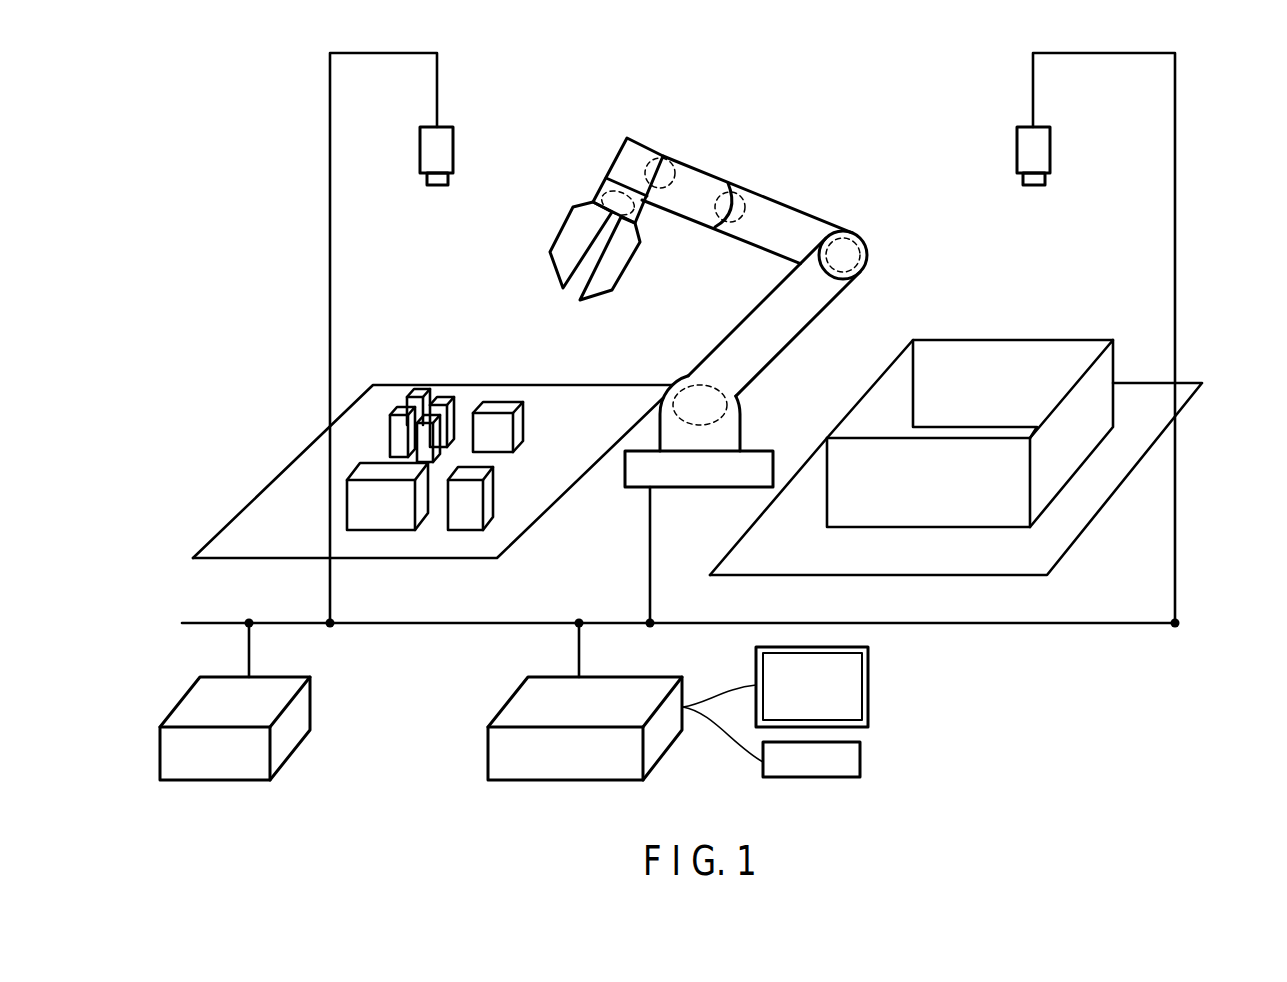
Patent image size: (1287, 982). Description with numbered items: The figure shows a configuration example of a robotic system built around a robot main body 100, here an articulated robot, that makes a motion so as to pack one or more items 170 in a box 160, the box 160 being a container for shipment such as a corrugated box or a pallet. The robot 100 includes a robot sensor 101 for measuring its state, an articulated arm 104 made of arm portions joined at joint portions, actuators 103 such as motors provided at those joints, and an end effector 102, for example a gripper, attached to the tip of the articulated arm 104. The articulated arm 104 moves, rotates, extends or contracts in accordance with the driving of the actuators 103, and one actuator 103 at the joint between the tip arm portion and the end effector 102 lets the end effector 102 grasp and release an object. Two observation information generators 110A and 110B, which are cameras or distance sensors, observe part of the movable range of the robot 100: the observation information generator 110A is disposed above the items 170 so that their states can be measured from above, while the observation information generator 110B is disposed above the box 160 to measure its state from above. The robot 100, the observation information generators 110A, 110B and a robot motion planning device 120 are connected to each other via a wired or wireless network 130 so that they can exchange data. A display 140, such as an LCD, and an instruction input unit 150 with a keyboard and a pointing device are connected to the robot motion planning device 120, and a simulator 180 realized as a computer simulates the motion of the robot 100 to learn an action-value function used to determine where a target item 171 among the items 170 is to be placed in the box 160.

The robot main body 100 is at (727, 356).
The robot sensor 101 is at (630, 272).
The end effector 102 is at (574, 290).
The actuators 103 is at (648, 160).
The articulated arm 104 is at (803, 213).
The observation information generator 110A is at (453, 150).
The observation information generator 110B is at (1017, 150).
The robot motion planning device 120 is at (635, 677).
The network 130 is at (1057, 625).
The display 140 is at (868, 688).
The instruction input unit 150 is at (860, 760).
The box 160 is at (978, 527).
The items 170 is at (502, 496).
The target item 171 is at (523, 418).
The simulator 180 is at (283, 677).